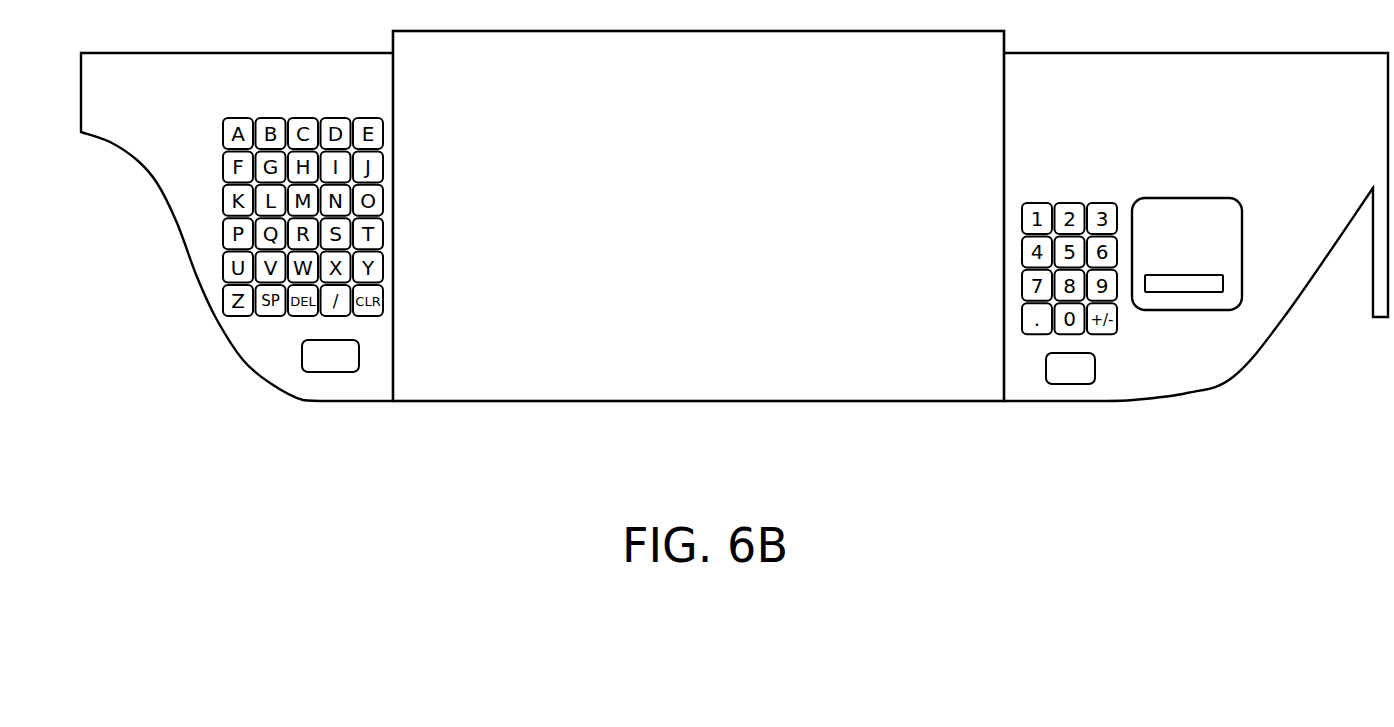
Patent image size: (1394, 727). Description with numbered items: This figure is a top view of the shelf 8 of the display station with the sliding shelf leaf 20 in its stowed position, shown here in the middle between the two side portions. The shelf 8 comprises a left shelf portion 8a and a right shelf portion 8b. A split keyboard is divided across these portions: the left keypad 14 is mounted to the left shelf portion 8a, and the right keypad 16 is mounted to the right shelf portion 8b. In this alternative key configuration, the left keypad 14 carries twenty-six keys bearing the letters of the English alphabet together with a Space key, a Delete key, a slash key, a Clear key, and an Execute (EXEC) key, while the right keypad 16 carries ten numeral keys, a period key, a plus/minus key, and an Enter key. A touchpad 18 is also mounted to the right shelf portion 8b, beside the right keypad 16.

The shelf 8 is at (734, 227).
The left shelf portion 8a is at (163, 168).
The right shelf portion 8b is at (1292, 273).
The left keypad 14 is at (287, 363).
The right keypad 16 is at (1108, 377).
The touchpad 18 is at (1236, 302).
The sliding shelf leaf 20 is at (607, 402).